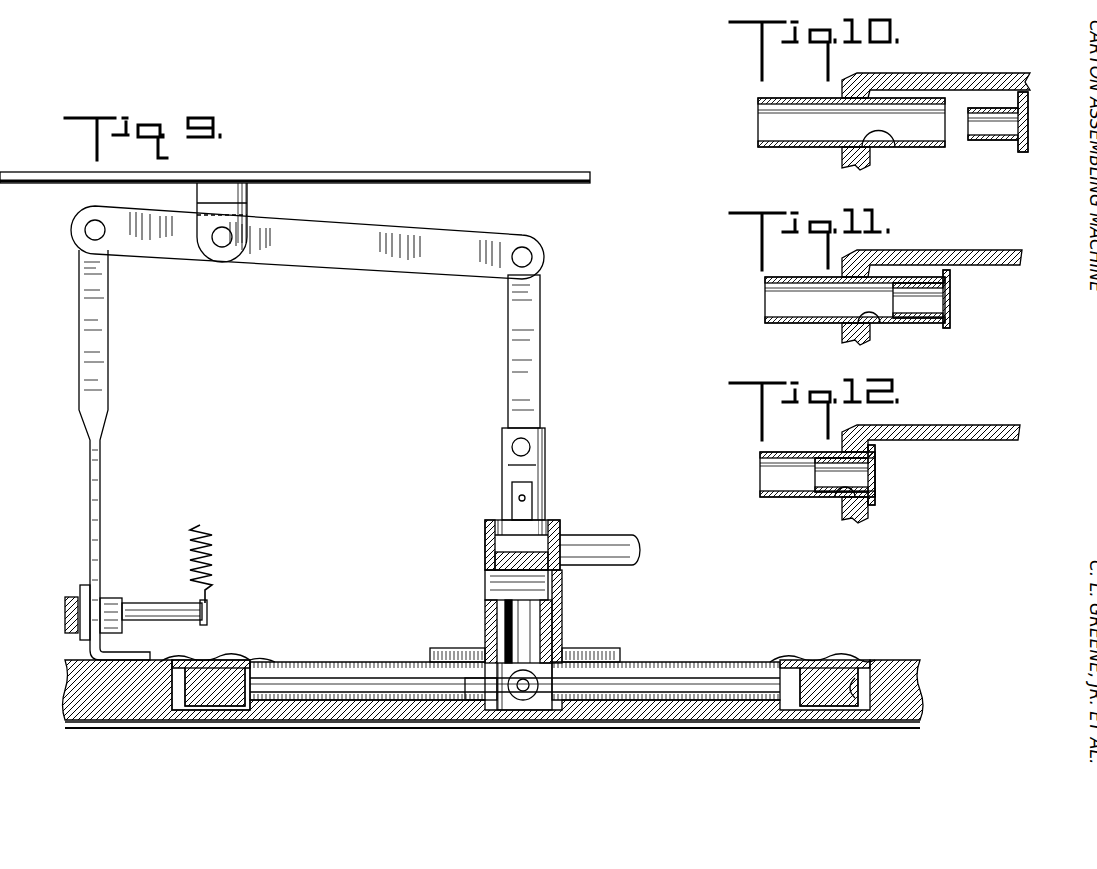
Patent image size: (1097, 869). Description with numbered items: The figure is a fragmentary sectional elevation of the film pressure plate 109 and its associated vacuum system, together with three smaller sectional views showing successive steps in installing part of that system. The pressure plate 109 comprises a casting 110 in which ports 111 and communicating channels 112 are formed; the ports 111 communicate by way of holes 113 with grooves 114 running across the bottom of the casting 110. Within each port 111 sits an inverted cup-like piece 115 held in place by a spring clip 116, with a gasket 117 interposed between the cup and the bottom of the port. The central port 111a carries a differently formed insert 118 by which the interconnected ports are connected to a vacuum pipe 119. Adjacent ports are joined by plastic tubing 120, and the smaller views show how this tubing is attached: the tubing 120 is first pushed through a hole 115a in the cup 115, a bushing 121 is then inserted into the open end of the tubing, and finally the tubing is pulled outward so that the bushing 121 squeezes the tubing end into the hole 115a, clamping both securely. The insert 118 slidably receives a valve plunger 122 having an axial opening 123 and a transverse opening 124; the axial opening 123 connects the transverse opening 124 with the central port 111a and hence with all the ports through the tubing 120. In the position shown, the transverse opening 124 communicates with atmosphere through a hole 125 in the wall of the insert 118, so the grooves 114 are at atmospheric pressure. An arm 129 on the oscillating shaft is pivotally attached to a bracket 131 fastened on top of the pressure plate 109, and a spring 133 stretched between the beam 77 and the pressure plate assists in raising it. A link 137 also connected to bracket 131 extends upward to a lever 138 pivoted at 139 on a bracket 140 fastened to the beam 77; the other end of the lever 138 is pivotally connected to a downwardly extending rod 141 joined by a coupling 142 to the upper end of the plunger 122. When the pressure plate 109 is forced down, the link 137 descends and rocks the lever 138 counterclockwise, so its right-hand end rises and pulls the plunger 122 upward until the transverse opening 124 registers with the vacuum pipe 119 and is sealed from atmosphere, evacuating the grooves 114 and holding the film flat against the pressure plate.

In FIG. 9, the beam 77 is at (318, 172).
In FIG. 9, the pressure plate 109 is at (330, 635).
In FIG. 9, the casting 110 is at (106, 720).
In FIG. 9, the ports 111 is at (192, 670).
In FIG. 9, the central port 111a is at (565, 650).
In FIG. 9, the communicating channels 112 is at (345, 662).
In FIG. 9, the holes 113 is at (225, 724).
In FIG. 9, the grooves 114 is at (163, 724).
In FIG. 9, the inverted cup-like piece 115 is at (262, 660).
In FIG. 10, the inverted cup-like piece 115 is at (925, 75).
In FIG. 11, the inverted cup-like piece 115 is at (925, 262).
In FIG. 12, the inverted cup-like piece 115 is at (942, 432).
In FIG. 10, the hole 115a is at (895, 150).
In FIG. 11, the hole 115a is at (878, 326).
In FIG. 12, the hole 115a is at (830, 500).
In FIG. 9, the spring clip 116 is at (242, 658).
In FIG. 9, the gasket 117 is at (215, 687).
In FIG. 9, the insert 118 is at (562, 606).
In FIG. 9, the vacuum pipe 119 is at (628, 536).
In FIG. 9, the tubing 120 is at (394, 678).
In FIG. 10, the tubing 120 is at (790, 150).
In FIG. 11, the tubing 120 is at (790, 330).
In FIG. 12, the tubing 120 is at (780, 500).
In FIG. 9, the bushing 121 is at (525, 700).
In FIG. 11, the bushing 121 is at (925, 310).
In FIG. 12, the bushing 121 is at (855, 485).
In FIG. 9, the valve plunger 122 is at (558, 530).
In FIG. 9, the axial opening 123 is at (485, 622).
In FIG. 9, the transverse opening 124 is at (490, 582).
In FIG. 9, the hole 125 is at (485, 558).
In FIG. 9, the arm 129 is at (65, 608).
In FIG. 9, the bracket 131 is at (80, 585).
In FIG. 9, the spring 133 is at (212, 532).
In FIG. 9, the link 137 is at (108, 386).
In FIG. 9, the lever 138 is at (368, 265).
In FIG. 9, the pivot 139 is at (222, 247).
In FIG. 9, the bracket 140 is at (247, 213).
In FIG. 9, the rod 141 is at (540, 338).
In FIG. 9, the coupling 142 is at (545, 462).